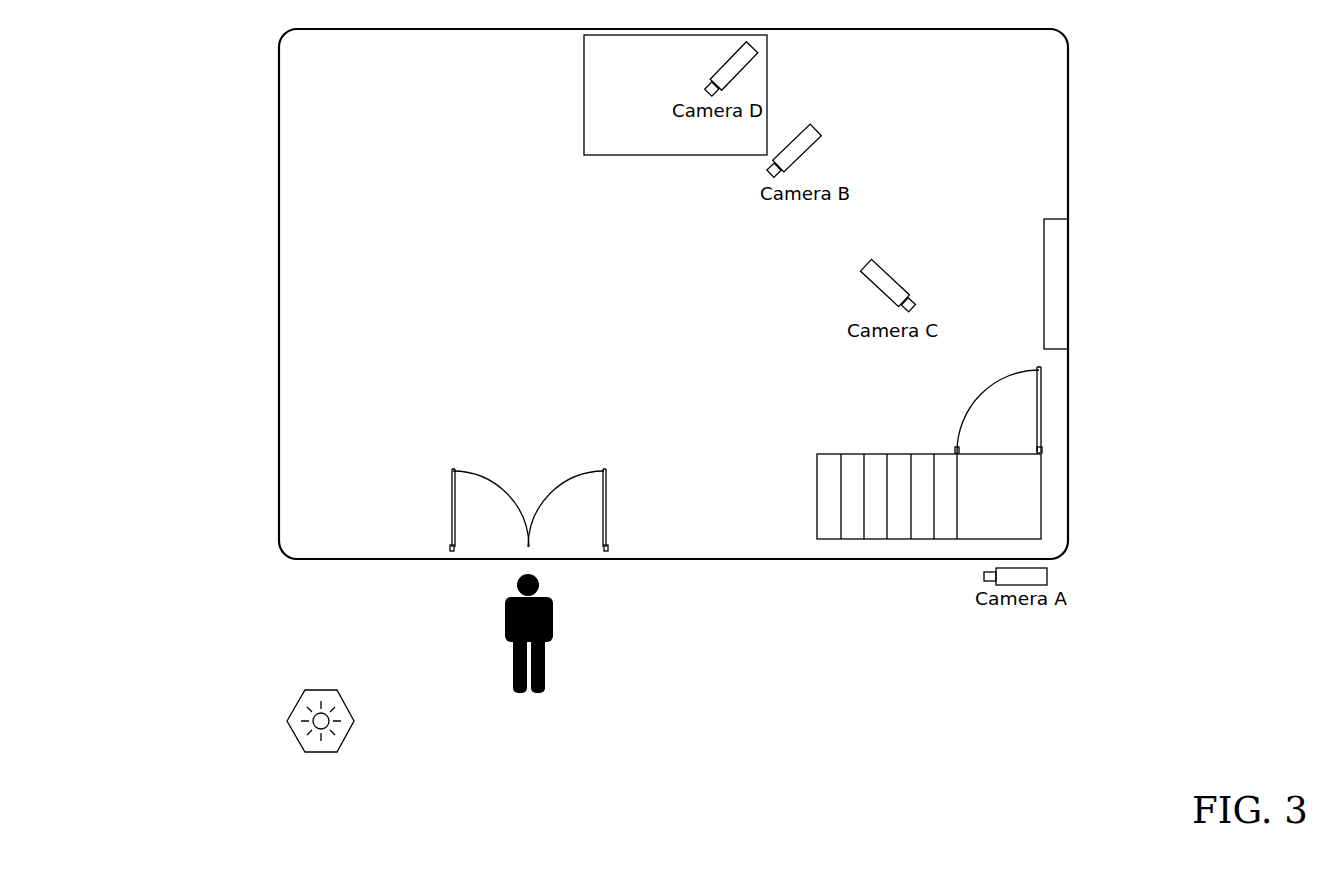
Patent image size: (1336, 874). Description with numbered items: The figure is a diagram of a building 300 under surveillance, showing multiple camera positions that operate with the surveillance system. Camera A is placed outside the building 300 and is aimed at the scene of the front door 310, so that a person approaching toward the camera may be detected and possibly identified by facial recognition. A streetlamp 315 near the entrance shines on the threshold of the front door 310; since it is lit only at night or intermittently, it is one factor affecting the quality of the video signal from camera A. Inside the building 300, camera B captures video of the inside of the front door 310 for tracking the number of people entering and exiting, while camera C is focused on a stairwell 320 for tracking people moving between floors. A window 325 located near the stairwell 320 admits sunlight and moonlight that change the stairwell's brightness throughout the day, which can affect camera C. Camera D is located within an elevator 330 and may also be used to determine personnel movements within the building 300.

The building 300 is at (1062, 36).
The front door 310 is at (606, 483).
The streetlamp 315 is at (325, 689).
The stairwell 320 is at (1013, 435).
The window 325 is at (1068, 236).
The elevator 330 is at (767, 63).